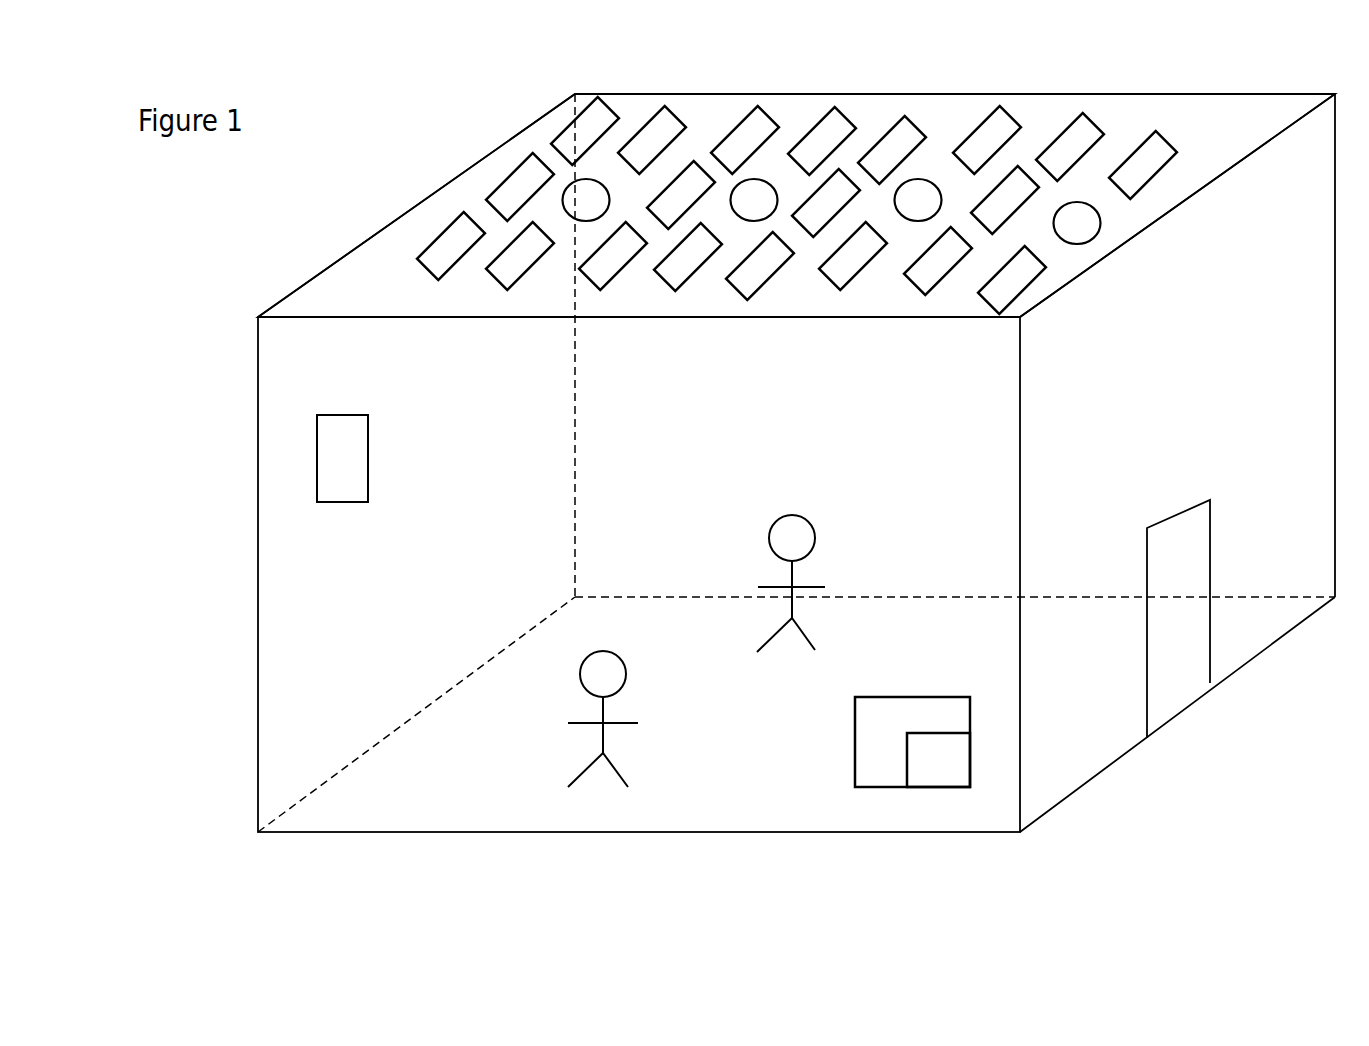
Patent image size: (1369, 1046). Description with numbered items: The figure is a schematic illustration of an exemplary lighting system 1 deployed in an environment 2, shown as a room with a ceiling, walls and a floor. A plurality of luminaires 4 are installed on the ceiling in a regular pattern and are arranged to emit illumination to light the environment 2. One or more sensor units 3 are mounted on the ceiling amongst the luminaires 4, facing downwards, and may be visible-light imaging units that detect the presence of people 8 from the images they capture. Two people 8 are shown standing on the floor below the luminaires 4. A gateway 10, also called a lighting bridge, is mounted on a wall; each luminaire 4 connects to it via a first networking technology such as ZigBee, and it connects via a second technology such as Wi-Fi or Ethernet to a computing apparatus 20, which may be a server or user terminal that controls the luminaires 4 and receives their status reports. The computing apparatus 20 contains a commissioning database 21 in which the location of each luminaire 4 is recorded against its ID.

The lighting system 1 is at (197, 279).
The environment 2 is at (944, 93).
The sensor unit 3 is at (562, 200).
The luminaire 4 is at (573, 120).
The people 8 is at (757, 652).
The gateway 10 is at (313, 458).
The computing apparatus 20 is at (886, 803).
The commissioning database 21 is at (947, 770).